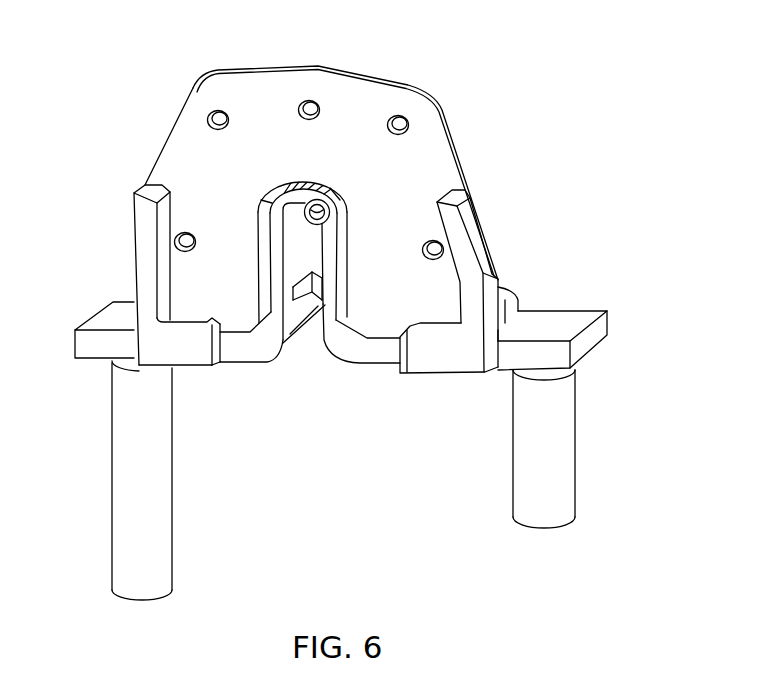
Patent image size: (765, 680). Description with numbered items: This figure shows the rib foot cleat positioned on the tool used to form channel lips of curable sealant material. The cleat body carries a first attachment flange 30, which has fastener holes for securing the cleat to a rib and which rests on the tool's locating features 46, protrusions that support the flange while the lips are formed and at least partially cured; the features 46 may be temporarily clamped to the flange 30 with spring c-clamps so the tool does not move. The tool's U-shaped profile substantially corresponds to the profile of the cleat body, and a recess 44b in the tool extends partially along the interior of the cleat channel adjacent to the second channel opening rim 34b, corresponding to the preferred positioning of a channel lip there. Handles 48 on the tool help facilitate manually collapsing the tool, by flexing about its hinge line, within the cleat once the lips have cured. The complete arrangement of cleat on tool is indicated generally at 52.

The first attachment flange 30 is at (255, 89).
The second channel opening rim 34b is at (345, 300).
The recess 44b is at (304, 185).
The locating features 46 is at (182, 352).
The handles 48 is at (557, 437).
The bracket assembly 52 is at (570, 133).